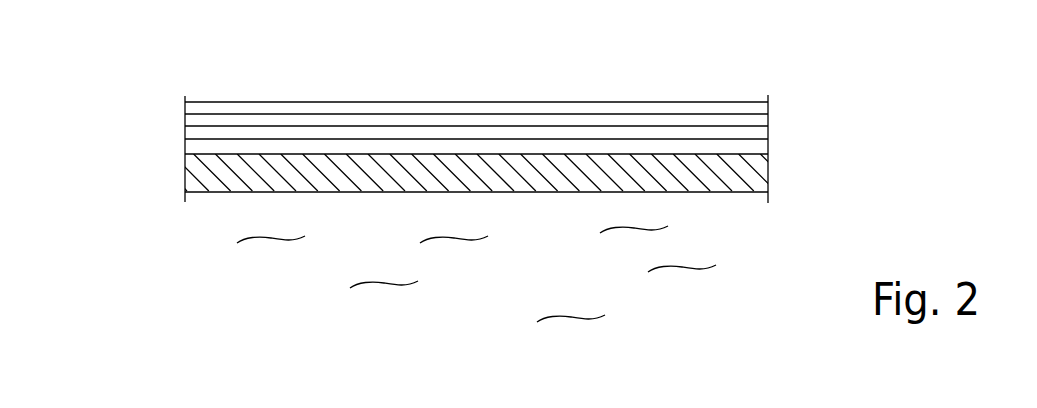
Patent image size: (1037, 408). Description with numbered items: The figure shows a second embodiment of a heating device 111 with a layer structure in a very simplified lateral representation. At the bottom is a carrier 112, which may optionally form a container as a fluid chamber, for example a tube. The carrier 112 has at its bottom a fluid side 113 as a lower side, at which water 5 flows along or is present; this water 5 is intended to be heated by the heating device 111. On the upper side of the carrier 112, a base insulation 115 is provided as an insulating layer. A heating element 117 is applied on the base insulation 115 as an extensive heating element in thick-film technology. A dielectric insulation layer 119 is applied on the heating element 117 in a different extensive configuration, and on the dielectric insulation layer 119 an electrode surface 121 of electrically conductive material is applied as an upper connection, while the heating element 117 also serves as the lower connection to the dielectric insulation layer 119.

The heating device 111 is at (601, 101).
The electrode surface 121 is at (768, 103).
The dielectric insulation layer 119 is at (768, 114).
The heating element 117 is at (768, 126).
The base insulation 115 is at (190, 147).
The carrier 112 is at (190, 182).
The fluid side 113 is at (746, 210).
The water 5 is at (523, 290).